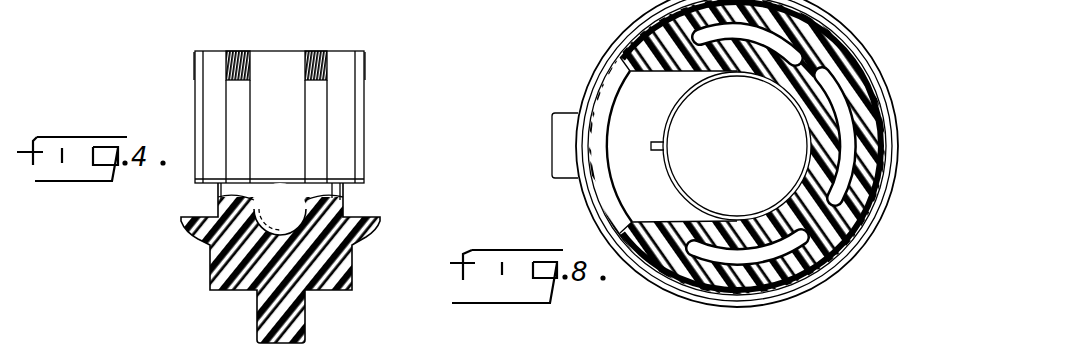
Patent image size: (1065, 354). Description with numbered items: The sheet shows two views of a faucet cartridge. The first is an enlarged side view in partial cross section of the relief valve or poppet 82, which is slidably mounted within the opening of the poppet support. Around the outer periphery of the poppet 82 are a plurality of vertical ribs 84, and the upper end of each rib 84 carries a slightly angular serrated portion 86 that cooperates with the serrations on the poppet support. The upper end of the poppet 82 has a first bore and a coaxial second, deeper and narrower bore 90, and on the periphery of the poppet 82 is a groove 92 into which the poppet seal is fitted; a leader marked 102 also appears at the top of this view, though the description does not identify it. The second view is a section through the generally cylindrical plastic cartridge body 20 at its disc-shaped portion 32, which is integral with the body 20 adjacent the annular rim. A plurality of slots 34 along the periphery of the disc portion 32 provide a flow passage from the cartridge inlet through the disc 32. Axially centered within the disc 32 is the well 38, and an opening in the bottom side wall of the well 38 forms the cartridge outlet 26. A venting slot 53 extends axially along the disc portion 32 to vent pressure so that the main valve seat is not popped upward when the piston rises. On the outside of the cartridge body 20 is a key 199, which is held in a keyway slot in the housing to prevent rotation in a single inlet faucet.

In FIG. 4, the upper assembly portion 102 is at (143, 2).
In FIG. 4, the poppet 82 is at (340, 57).
In FIG. 4, the vertical ribs 84 is at (313, 105).
In FIG. 4, the serrated portion 86 is at (317, 50).
In FIG. 4, the second bore 90 is at (279, 213).
In FIG. 4, the groove 92 is at (370, 217).
In FIG. 8, the cartridge body 20 is at (608, 42).
In FIG. 8, the key 199 is at (557, 151).
In FIG. 8, the venting slot 53 is at (665, 146).
In FIG. 8, the well 38 is at (737, 146).
In FIG. 8, the outlet 26 is at (680, 205).
In FIG. 8, the disc-shaped portion 32 is at (705, 280).
In FIG. 8, the slots 34 is at (856, 250).